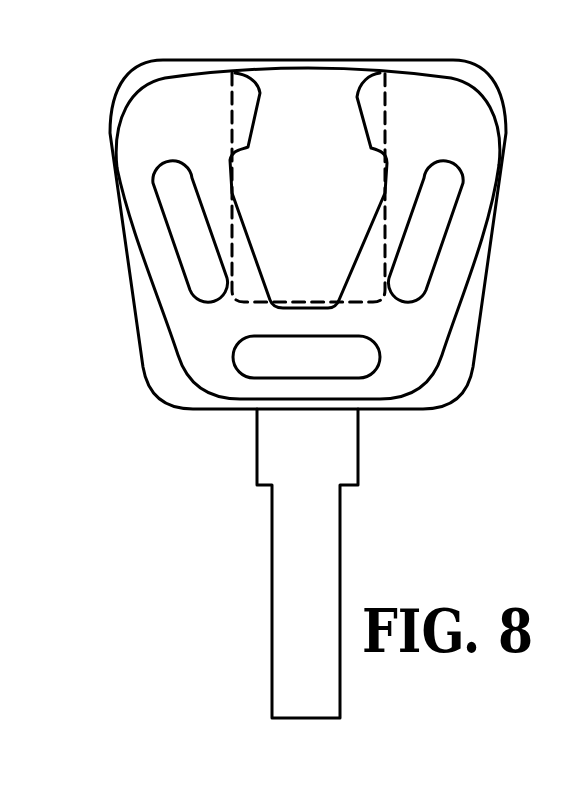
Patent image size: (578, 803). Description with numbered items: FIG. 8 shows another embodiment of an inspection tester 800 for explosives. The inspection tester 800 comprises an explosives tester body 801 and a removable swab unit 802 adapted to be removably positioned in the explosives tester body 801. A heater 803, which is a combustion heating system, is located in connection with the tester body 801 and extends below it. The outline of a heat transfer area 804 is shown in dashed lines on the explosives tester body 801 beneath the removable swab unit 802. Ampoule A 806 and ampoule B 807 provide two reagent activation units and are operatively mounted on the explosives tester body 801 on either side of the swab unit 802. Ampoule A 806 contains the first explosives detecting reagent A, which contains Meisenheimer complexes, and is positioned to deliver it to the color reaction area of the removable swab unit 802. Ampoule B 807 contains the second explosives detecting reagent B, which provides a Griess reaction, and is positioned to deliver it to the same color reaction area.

The inspection tester 800 is at (297, 359).
The explosives tester body 801 is at (118, 208).
The removable swab unit 802 is at (343, 207).
The heater 803 is at (340, 540).
The heat transfer area 804 is at (232, 123).
The ampoule A 806 is at (188, 242).
The ampoule B 807 is at (433, 250).